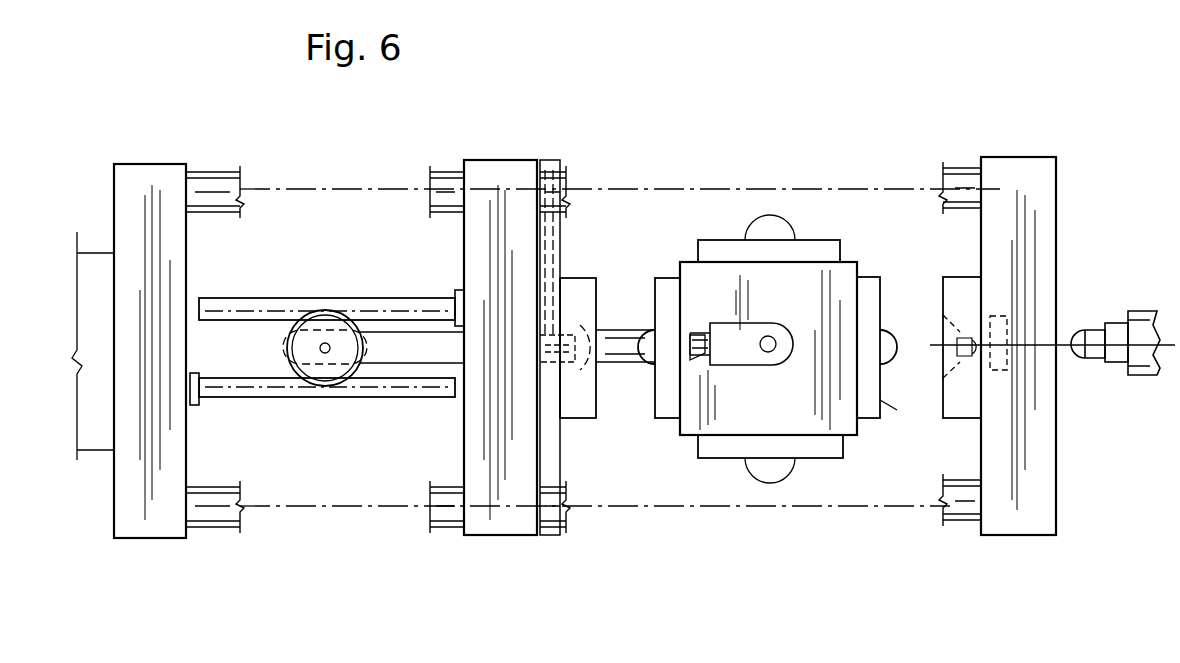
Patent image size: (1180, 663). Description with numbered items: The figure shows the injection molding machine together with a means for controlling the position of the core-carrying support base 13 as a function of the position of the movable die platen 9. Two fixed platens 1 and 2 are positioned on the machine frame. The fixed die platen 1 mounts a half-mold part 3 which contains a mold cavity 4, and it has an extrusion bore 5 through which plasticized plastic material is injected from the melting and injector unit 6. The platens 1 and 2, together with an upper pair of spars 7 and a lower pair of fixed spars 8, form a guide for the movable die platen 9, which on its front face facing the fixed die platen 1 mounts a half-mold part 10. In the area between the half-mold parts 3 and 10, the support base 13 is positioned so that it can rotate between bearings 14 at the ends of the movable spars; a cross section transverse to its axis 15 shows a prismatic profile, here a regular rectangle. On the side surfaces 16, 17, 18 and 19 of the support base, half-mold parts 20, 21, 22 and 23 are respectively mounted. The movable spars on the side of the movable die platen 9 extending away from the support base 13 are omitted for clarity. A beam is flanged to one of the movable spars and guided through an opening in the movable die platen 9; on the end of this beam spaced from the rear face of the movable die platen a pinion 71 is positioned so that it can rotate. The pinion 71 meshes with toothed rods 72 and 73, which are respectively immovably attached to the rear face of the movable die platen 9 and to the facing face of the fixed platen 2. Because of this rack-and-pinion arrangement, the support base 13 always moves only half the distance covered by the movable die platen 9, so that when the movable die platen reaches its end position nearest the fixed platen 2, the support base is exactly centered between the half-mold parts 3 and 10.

The fixed die platen 1 is at (997, 175).
The fixed platen 2 is at (150, 185).
The half-mold part 3 is at (965, 285).
The mold cavity 4 is at (955, 325).
The extrusion bore 5 is at (972, 345).
The melting and injector unit 6 is at (1095, 340).
The upper pair of spars 7 is at (205, 195).
The lower pair of fixed spars 8 is at (210, 508).
The movable die platen 9 is at (490, 185).
The half-mold part 10 is at (582, 292).
The core-carrying support base 13 is at (743, 275).
The bearings 14 is at (760, 352).
The axis 15 is at (770, 350).
The side surface 16 is at (687, 432).
The side surface 17 is at (862, 267).
The side surface 18 is at (850, 265).
The side surface 19 is at (675, 262).
The half-mold part 20 is at (825, 448).
The half-mold part 21 is at (897, 410).
The half-mold part 22 is at (705, 247).
The half-mold part 23 is at (655, 292).
The pinion 71 is at (333, 370).
The toothed rod 72 is at (268, 390).
The toothed rod 73 is at (283, 305).